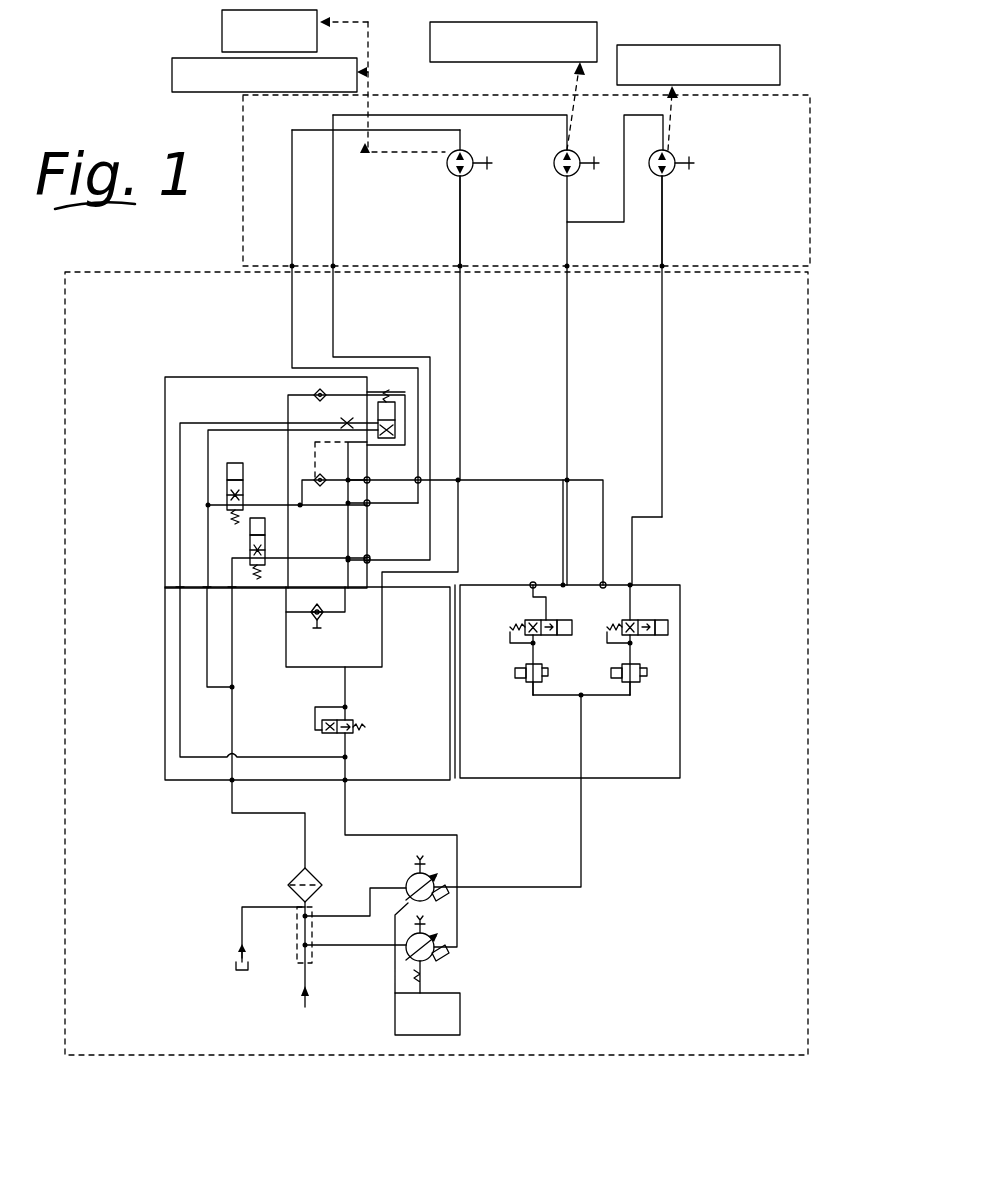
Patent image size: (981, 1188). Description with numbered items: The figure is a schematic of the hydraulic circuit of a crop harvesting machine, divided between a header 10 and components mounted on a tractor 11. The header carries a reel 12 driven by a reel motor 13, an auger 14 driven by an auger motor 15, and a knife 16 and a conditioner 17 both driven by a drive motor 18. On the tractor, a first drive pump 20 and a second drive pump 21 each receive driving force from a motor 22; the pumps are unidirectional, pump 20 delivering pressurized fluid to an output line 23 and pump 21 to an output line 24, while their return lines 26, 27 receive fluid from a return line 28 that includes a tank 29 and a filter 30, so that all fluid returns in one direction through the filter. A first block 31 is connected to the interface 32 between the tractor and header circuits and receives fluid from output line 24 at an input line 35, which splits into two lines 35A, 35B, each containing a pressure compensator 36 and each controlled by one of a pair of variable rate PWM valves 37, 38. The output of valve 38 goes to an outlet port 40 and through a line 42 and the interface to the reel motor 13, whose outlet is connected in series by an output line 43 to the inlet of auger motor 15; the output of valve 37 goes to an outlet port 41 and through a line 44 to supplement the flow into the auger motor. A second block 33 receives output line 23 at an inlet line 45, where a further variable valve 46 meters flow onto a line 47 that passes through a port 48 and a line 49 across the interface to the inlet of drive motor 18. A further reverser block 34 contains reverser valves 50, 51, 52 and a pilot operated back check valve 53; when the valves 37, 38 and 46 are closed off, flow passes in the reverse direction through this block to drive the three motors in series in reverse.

The header 10 is at (838, 185).
The tractor 11 is at (826, 496).
The reel 12 is at (780, 65).
The reel motor 13 is at (672, 173).
The auger 14 is at (597, 27).
The auger motor 15 is at (556, 152).
The knife 16 is at (222, 35).
The conditioner 17 is at (171, 72).
The drive motor 18 is at (448, 155).
The first drive pump 20 is at (440, 950).
The second drive pump 21 is at (437, 900).
The motor 22 is at (460, 1015).
The output line 23 is at (462, 853).
The output line 24 is at (585, 855).
The return line 26 is at (372, 885).
The return line 27 is at (350, 948).
The return line 28 is at (303, 836).
The tank 29 is at (232, 963).
The filter 30 is at (284, 881).
The first block 31 is at (683, 755).
The interface 32 is at (700, 272).
The second block 33 is at (160, 662).
The reverser block 34 is at (162, 398).
The input line 35 is at (583, 740).
The line 35A is at (548, 700).
The line 35B is at (612, 703).
The pressure compensator 36 is at (515, 660).
The variable rate valve 37 is at (546, 598).
The variable rate valve 38 is at (645, 598).
The outlet port 40 is at (628, 582).
The outlet port 41 is at (560, 580).
The line 42 is at (662, 403).
The output line 43 is at (610, 225).
The line 44 is at (567, 345).
The inlet line 45 is at (348, 768).
The variable valve 46 is at (358, 716).
The line 47 is at (345, 685).
The port 48 is at (382, 590).
The line 49 is at (460, 378).
The reverser valve 50 is at (388, 390).
The reverser valve 51 is at (224, 492).
The reverser valve 52 is at (250, 545).
The pilot operated back check valve 53 is at (318, 478).